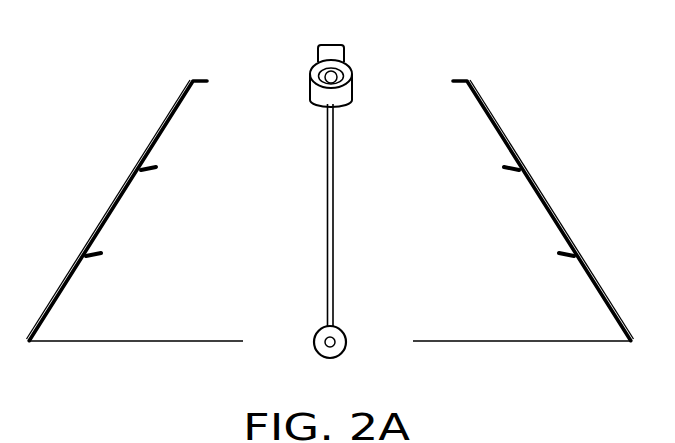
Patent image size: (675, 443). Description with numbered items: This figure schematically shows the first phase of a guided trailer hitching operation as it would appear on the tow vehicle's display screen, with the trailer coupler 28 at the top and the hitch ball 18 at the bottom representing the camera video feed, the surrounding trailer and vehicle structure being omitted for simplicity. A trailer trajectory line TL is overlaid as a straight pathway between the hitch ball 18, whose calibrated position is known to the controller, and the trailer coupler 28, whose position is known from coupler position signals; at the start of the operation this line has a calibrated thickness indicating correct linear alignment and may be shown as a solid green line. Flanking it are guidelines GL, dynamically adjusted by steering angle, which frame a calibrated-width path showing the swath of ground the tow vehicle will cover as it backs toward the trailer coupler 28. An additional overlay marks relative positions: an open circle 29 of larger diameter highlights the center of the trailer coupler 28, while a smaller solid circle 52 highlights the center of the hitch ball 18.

The trailer coupler 28 is at (348, 78).
The open circle 29 is at (318, 72).
The trailer trajectory line TL is at (335, 202).
The guidelines GL is at (120, 182).
The hitch ball 18 is at (313, 340).
The solid circle 52 is at (348, 347).